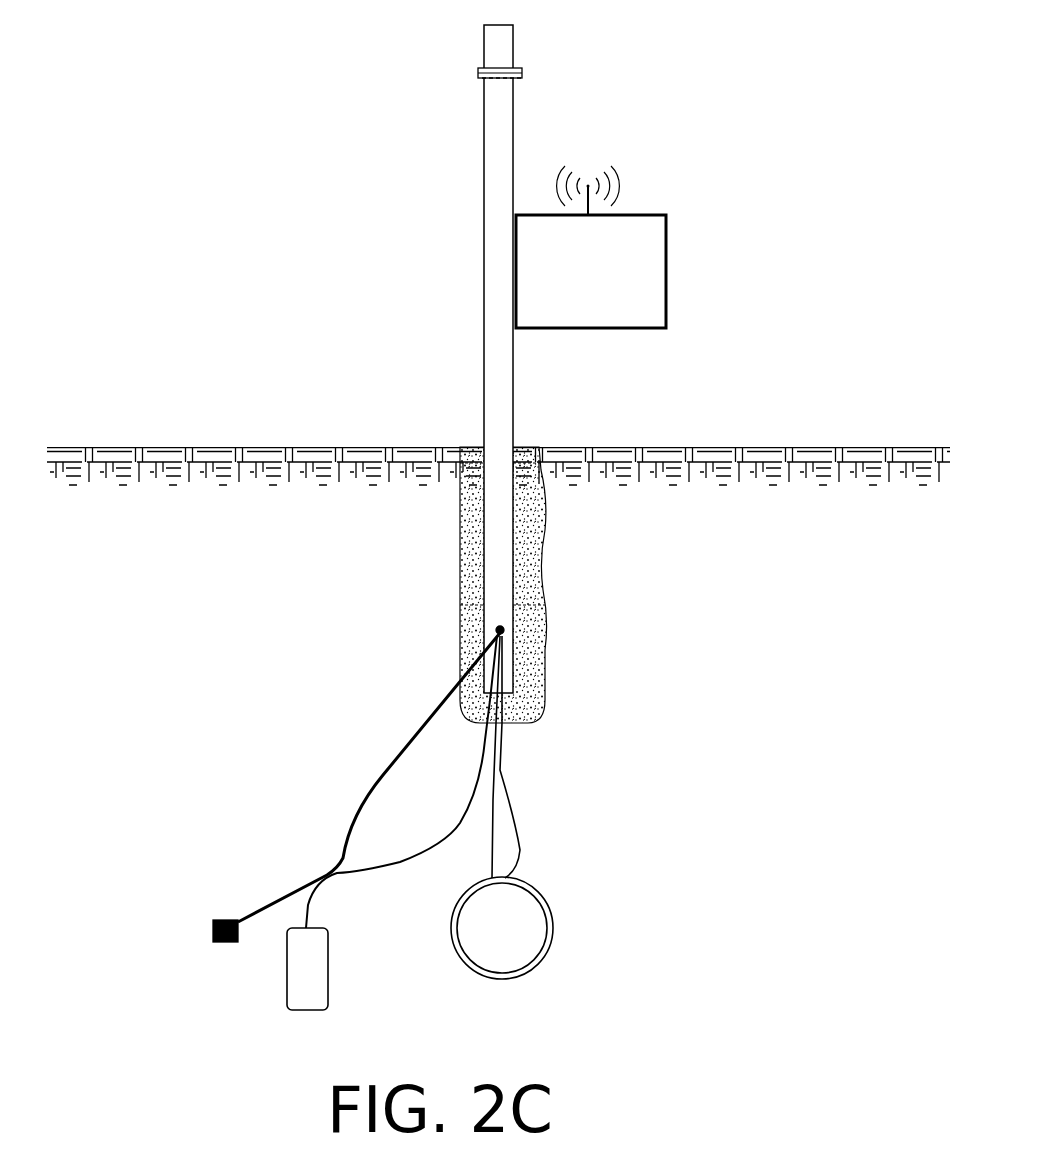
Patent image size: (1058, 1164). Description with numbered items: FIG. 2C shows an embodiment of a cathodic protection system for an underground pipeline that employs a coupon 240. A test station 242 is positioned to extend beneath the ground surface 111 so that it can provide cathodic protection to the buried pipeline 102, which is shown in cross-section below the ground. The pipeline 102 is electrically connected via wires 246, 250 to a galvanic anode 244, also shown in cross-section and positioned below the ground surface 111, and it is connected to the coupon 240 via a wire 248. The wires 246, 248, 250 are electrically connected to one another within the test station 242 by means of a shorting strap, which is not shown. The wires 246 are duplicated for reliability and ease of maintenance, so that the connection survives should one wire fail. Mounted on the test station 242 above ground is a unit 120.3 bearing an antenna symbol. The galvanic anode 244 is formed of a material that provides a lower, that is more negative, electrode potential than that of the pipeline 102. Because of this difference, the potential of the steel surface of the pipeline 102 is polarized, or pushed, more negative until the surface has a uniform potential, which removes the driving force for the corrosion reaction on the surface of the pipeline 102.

The ground surface 111 is at (187, 447).
The test station 242 is at (483, 190).
The communication unit 120.3 is at (553, 281).
The wire 248 is at (385, 768).
The wire 250 is at (478, 788).
The wires 246 is at (520, 826).
The coupon 240 is at (212, 926).
The galvanic anode 244 is at (287, 990).
The pipeline 102 is at (452, 938).